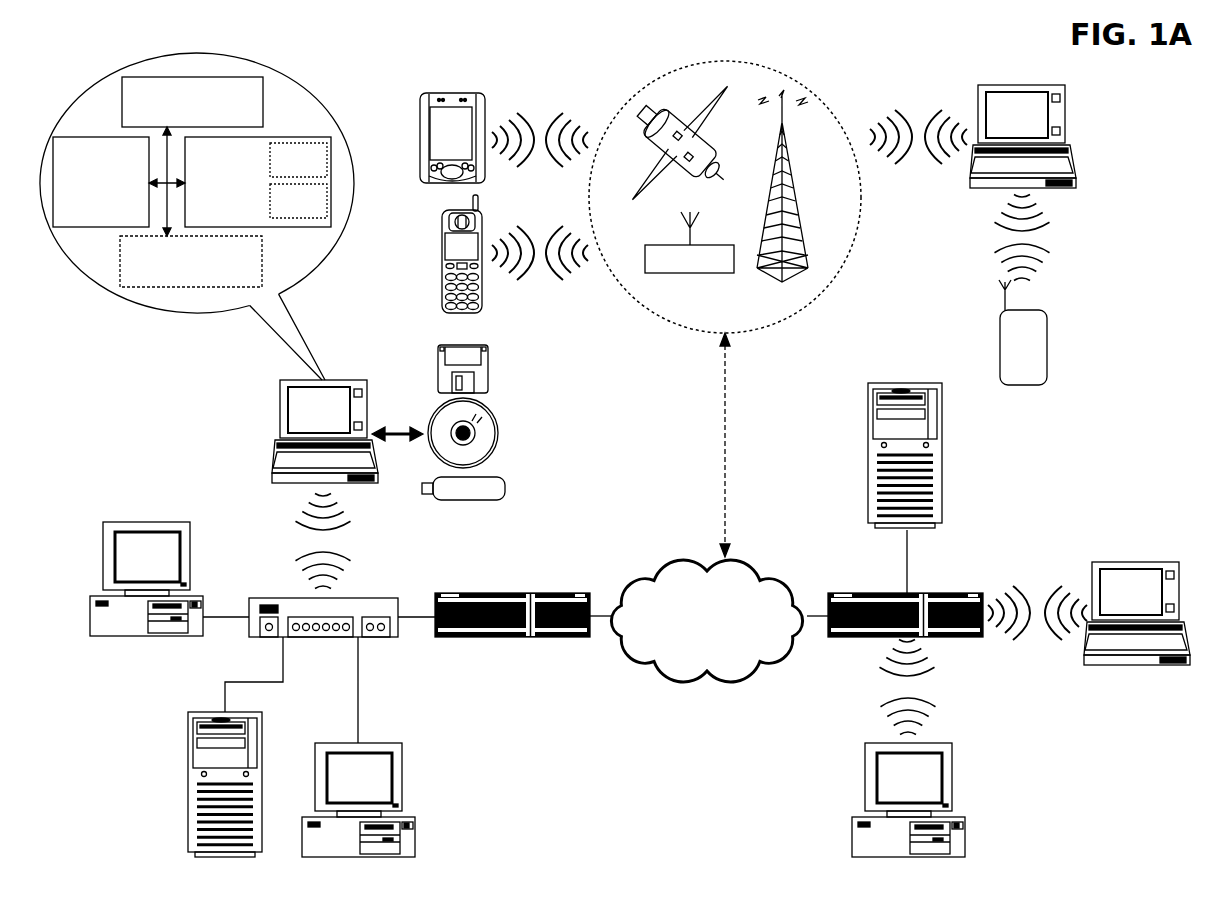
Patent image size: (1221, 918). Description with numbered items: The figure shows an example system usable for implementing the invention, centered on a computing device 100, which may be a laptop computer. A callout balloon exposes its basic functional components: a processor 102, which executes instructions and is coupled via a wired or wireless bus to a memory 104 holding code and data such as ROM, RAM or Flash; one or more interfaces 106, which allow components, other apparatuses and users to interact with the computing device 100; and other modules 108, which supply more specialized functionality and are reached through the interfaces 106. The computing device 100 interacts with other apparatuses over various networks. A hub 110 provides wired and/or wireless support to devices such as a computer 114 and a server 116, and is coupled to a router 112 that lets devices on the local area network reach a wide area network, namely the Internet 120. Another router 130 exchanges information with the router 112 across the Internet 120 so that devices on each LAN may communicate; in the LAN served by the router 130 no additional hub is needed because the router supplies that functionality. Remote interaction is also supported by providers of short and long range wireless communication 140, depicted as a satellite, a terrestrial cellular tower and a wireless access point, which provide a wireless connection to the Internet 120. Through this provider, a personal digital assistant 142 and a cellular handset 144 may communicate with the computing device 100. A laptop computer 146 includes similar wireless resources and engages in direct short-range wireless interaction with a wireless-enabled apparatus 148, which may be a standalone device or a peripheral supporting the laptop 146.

The computing device 100 is at (277, 413).
The processor 102 is at (101, 182).
The memory 104 is at (258, 182).
The interfaces 106 is at (192, 102).
The other modules 108 is at (191, 261).
The hub 110 is at (368, 595).
The router 112 is at (555, 592).
The computer 114 is at (97, 593).
The server 116 is at (188, 780).
The Internet 120 is at (640, 673).
The router 130 is at (940, 592).
The wireless communication 140 is at (835, 112).
The personal digital assistant 142 is at (420, 140).
The cellular handset 144 is at (442, 260).
The laptop computer 146 is at (1067, 130).
The wireless-enabled apparatus 148 is at (1048, 342).